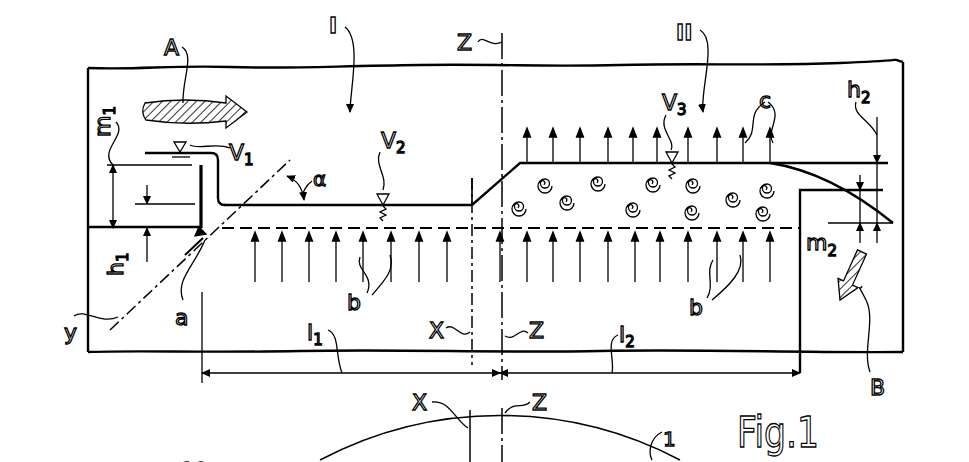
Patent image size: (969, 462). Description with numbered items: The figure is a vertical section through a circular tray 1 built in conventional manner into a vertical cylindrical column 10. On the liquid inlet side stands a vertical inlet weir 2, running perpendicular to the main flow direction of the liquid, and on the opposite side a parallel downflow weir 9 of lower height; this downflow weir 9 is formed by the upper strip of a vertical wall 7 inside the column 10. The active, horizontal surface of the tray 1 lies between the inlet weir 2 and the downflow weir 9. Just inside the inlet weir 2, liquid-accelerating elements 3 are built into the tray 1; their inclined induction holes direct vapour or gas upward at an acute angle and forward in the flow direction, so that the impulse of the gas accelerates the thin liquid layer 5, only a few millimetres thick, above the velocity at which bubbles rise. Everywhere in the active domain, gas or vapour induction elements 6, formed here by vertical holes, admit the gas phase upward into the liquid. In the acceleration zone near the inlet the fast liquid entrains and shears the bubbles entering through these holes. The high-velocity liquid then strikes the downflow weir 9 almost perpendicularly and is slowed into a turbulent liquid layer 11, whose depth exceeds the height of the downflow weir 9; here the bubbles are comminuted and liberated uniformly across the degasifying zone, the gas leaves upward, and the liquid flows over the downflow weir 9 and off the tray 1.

The tray 1 is at (135, 229).
The inlet weir 2 is at (194, 228).
The liquid-accelerating element 3 is at (226, 232).
The liquid layer 5 is at (352, 207).
The gas or vapour induction elements 6 is at (422, 220).
The vertical wall 7 is at (802, 292).
The downflow weir 9 is at (810, 228).
The column 10 is at (87, 118).
The liquid layer 11 is at (585, 175).